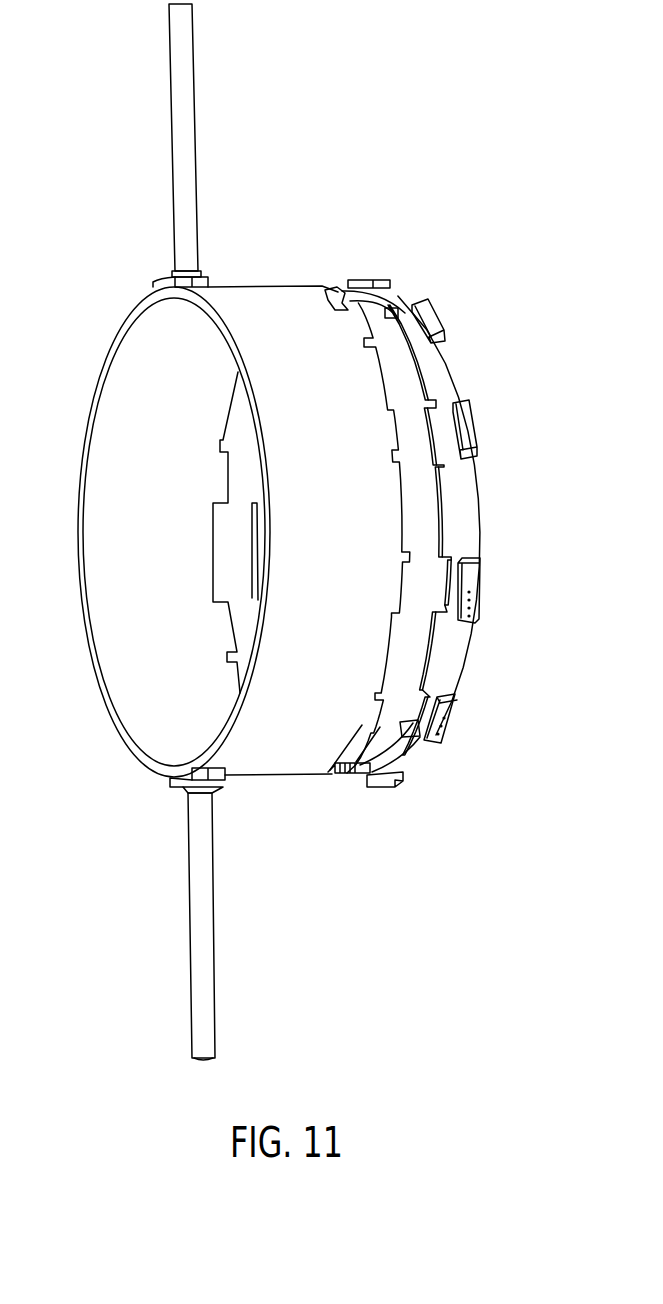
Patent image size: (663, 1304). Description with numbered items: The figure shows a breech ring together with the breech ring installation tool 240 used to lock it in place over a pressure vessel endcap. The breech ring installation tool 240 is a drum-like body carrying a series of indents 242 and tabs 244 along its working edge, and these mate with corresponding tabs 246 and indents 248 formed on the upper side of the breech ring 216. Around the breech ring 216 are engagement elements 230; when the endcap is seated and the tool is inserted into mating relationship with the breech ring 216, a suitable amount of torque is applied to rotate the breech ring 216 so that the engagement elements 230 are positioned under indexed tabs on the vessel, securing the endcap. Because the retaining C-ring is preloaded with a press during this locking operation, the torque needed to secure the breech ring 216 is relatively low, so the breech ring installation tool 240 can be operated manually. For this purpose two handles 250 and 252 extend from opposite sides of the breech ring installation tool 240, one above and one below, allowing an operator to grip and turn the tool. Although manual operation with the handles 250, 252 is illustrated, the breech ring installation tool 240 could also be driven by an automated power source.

The breech ring 216 is at (438, 373).
The engagement elements 230 is at (438, 318).
The breech ring installation tool 240 is at (351, 512).
The indents 242 is at (381, 360).
The tabs 244 is at (373, 718).
The tabs 246 is at (427, 394).
The indents 248 is at (425, 710).
The handle 250 is at (198, 188).
The handle 252 is at (215, 1012).